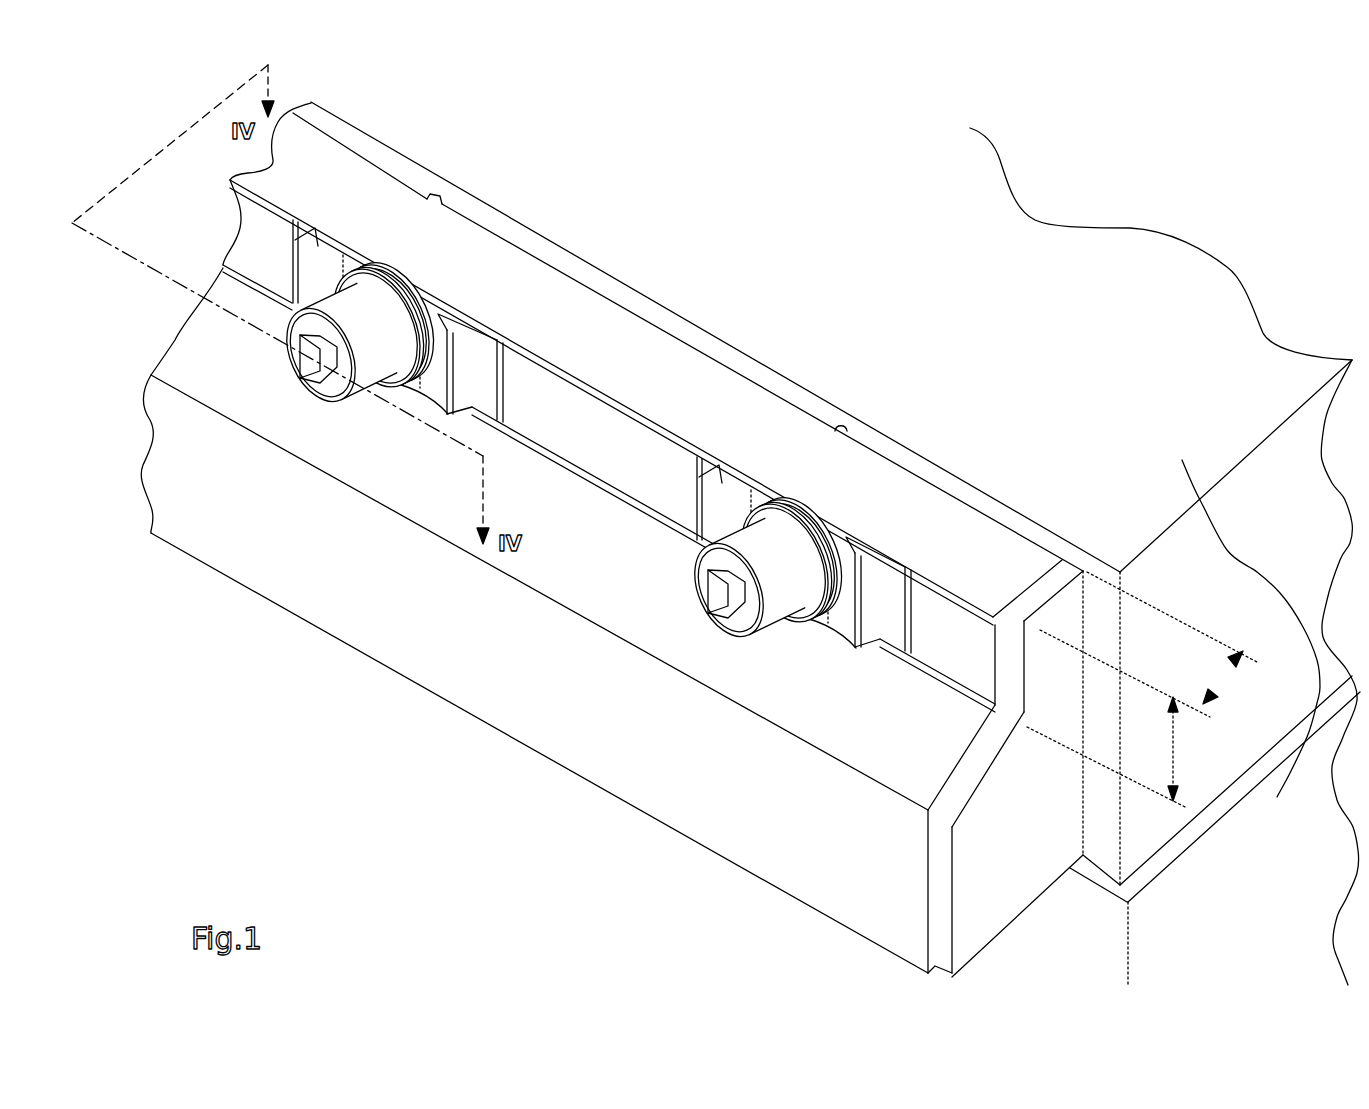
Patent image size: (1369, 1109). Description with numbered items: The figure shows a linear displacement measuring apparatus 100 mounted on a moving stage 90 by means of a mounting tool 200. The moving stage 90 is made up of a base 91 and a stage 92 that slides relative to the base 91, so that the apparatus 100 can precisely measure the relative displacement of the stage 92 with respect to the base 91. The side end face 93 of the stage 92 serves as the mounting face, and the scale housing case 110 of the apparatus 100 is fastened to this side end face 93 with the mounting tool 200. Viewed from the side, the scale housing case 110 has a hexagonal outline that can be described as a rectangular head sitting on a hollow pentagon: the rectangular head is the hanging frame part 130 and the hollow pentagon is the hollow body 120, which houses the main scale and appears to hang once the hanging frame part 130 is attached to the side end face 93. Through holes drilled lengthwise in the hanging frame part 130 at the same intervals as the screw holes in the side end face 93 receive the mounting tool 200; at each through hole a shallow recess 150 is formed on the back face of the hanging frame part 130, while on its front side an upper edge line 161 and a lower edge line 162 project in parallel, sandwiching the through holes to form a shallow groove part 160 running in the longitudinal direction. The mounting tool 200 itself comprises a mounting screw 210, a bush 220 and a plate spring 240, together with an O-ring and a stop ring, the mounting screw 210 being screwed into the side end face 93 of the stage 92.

The moving stage 90 is at (1156, 557).
The base 91 is at (1182, 460).
The stage 92 is at (1220, 282).
The side end face 93 is at (1097, 605).
The linear displacement measuring apparatus 100 is at (581, 537).
The scale housing case 110 is at (606, 332).
The hollow body 120 is at (705, 820).
The hanging frame part 130 is at (702, 390).
The shallow recess 150 is at (848, 436).
The shallow groove part 160 is at (609, 446).
The upper edge line 161 is at (527, 347).
The lower edge line 162 is at (577, 472).
The mounting tool 200 is at (596, 490).
The mounting screw 210 is at (770, 583).
The bush 220 is at (770, 505).
The plate spring 240 is at (873, 587).